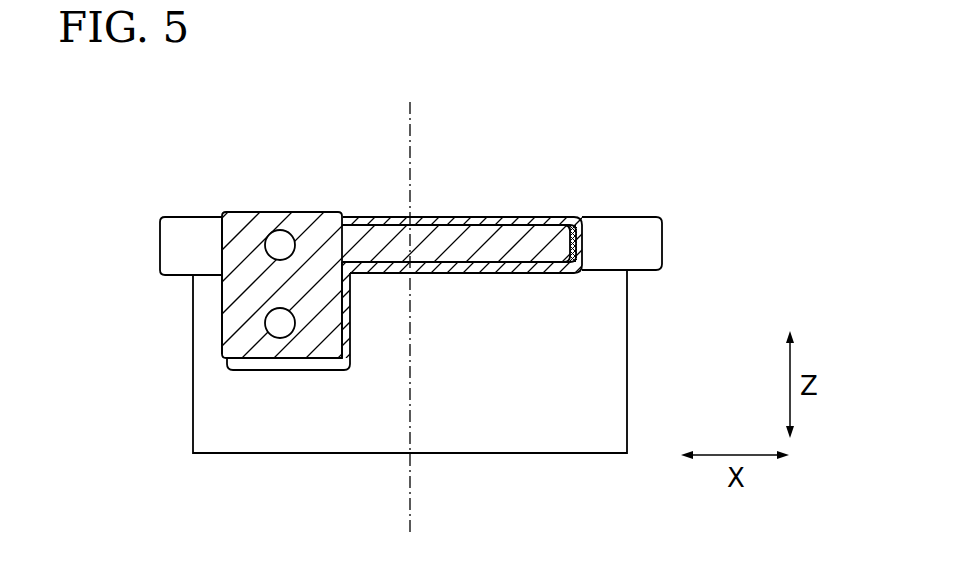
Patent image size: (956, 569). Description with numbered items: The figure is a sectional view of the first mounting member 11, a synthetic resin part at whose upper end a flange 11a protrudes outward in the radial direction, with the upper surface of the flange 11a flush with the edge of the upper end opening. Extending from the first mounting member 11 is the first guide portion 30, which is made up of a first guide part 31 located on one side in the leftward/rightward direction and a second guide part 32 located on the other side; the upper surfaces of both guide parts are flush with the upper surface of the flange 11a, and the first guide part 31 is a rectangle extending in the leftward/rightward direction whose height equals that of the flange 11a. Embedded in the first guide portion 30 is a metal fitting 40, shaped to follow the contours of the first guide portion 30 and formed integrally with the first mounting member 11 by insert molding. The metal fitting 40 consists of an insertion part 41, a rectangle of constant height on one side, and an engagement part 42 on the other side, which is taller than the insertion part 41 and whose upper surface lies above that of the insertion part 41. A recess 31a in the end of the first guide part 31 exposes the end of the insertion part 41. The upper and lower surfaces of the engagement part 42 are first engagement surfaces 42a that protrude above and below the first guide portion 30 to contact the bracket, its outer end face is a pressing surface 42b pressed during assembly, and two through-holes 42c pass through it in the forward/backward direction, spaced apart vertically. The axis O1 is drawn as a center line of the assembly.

The first mounting member 11 is at (672, 243).
The flange 11a is at (625, 228).
The first guide portion 30 is at (424, 317).
The first guide part 31 is at (568, 222).
The recess 31a is at (546, 222).
The second guide part 32 is at (346, 315).
The metal fitting 40 is at (363, 209).
The insertion part 41 is at (380, 238).
The engagement part 42 is at (295, 222).
The first engagement surfaces 42a is at (247, 210).
The pressing surface 42b is at (222, 297).
The through-holes 42c is at (293, 245).
The optical axis O1 is at (410, 127).